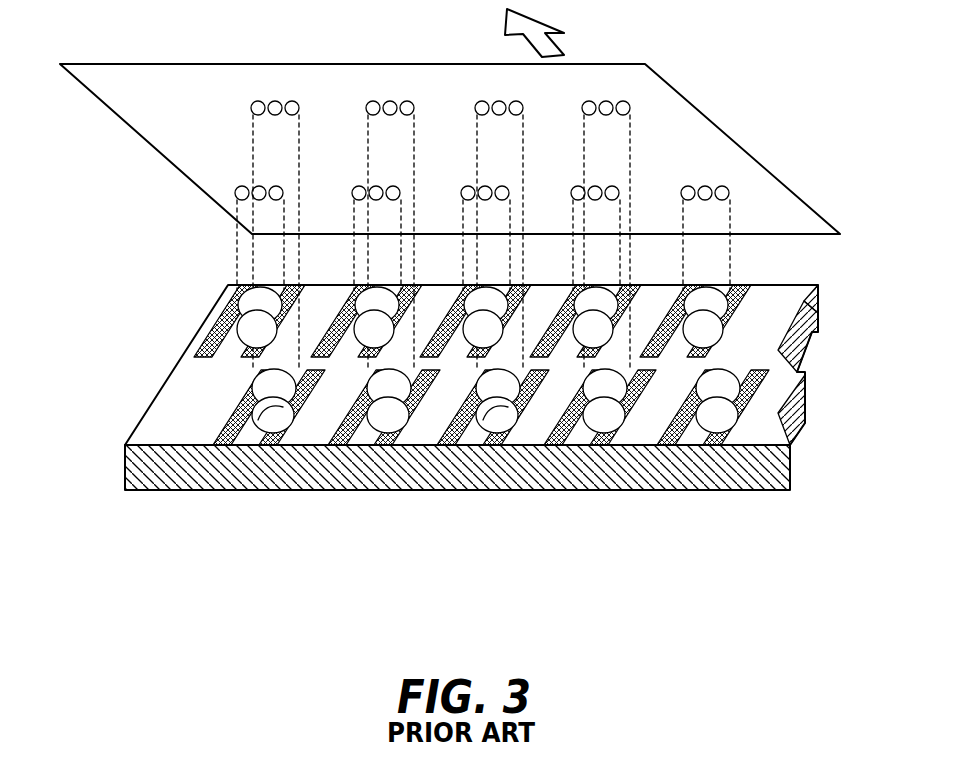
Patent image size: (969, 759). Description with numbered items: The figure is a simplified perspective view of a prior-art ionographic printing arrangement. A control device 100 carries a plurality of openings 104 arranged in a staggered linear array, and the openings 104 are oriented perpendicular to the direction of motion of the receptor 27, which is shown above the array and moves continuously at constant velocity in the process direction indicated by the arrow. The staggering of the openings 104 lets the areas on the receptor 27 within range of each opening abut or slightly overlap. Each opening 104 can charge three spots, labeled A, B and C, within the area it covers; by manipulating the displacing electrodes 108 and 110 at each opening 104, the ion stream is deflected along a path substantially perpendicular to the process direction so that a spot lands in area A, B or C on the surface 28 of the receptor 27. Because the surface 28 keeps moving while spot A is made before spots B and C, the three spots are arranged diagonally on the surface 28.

The receptor 27 is at (732, 133).
The surface 28 is at (190, 138).
The control device 100 is at (742, 470).
The openings 104 is at (276, 408).
The displacing electrode 108 is at (225, 440).
The displacing electrode 110 is at (262, 437).